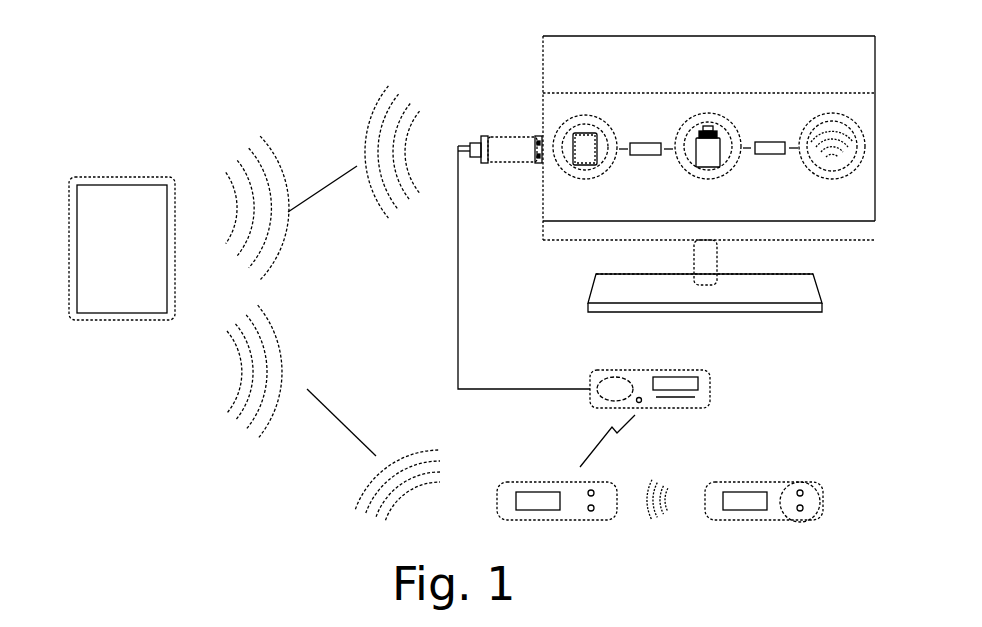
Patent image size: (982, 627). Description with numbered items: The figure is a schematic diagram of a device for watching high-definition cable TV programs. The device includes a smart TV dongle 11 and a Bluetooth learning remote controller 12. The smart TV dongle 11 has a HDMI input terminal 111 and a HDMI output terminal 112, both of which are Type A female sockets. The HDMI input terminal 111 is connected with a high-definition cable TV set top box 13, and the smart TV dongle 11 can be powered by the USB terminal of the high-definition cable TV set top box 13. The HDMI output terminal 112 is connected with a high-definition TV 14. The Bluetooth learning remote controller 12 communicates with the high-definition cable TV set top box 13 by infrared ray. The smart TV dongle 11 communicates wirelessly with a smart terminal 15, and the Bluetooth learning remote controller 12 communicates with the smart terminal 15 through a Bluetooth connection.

The smart TV dongle 11 is at (512, 137).
The HDMI input terminal 111 is at (483, 134).
The HDMI output terminal 112 is at (538, 134).
The Bluetooth learning remote controller 12 is at (498, 500).
The high-definition cable TV set top box 13 is at (710, 386).
The high-definition TV 14 is at (617, 36).
The smart terminal 15 is at (157, 173).